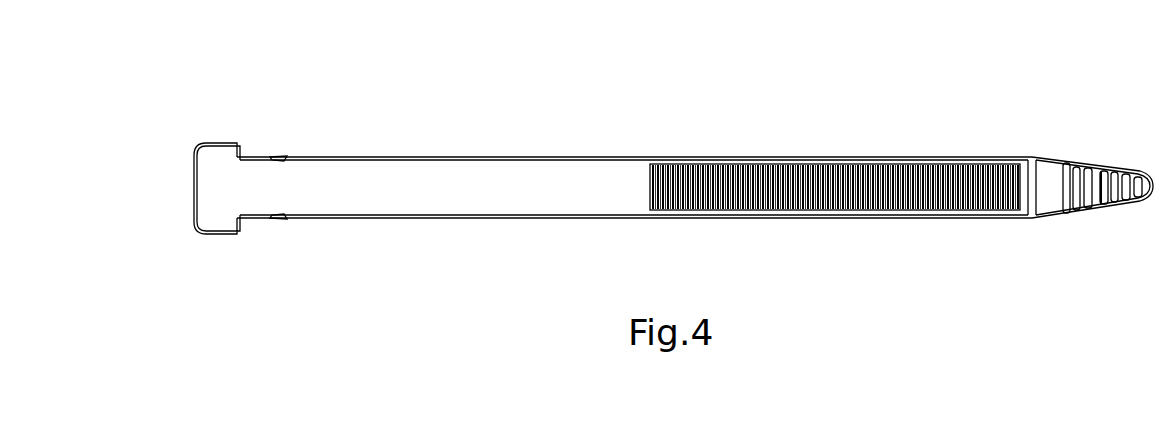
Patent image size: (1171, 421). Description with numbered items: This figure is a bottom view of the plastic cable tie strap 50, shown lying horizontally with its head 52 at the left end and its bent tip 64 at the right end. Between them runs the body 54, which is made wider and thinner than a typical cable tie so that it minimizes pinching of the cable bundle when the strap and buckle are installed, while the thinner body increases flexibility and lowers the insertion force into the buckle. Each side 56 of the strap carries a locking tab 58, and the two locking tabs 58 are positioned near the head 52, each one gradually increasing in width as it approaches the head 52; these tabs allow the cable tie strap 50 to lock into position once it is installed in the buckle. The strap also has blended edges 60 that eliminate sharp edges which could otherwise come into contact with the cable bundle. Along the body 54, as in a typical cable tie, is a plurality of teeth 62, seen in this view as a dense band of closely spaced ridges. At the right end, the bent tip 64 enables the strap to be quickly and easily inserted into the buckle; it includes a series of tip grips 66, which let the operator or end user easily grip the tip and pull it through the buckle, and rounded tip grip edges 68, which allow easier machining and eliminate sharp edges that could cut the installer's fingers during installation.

The cable tie strap 50 is at (718, 98).
The head 52 is at (217, 212).
The body 54 is at (512, 185).
The side 56 is at (403, 157).
The locking tab 58 is at (278, 157).
The blended edges 60 is at (903, 160).
The teeth 62 is at (780, 198).
The bent tip 64 is at (1055, 170).
The tip grips 66 is at (1103, 180).
The rounded tip grip edges 68 is at (1105, 197).